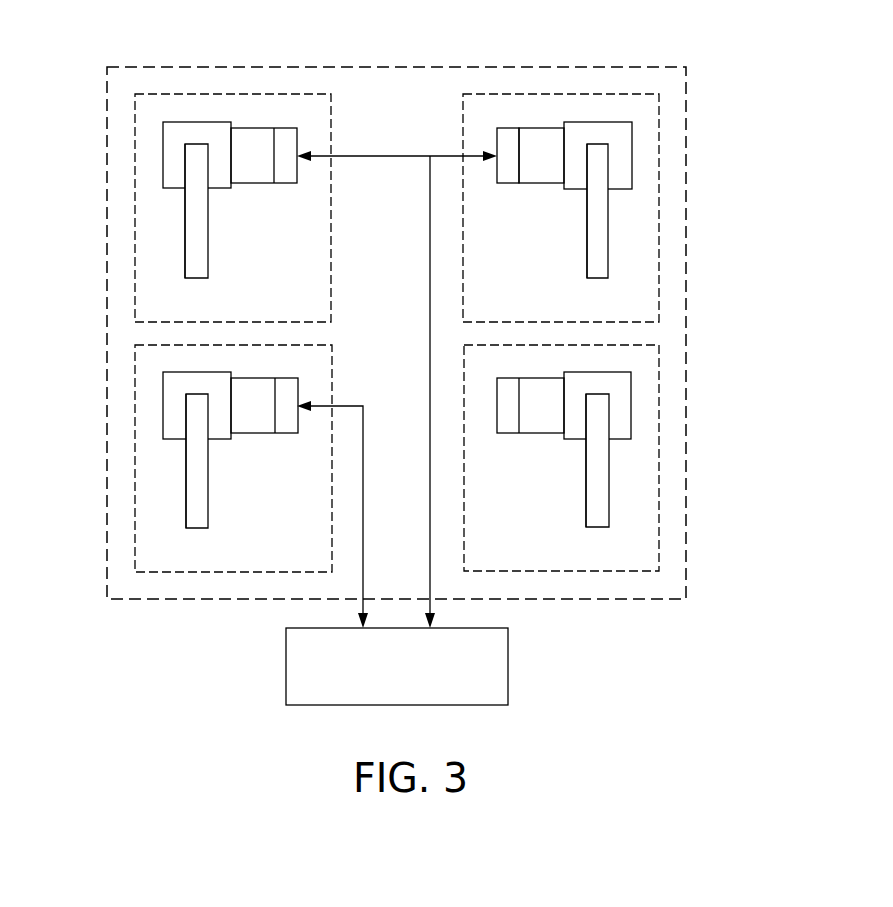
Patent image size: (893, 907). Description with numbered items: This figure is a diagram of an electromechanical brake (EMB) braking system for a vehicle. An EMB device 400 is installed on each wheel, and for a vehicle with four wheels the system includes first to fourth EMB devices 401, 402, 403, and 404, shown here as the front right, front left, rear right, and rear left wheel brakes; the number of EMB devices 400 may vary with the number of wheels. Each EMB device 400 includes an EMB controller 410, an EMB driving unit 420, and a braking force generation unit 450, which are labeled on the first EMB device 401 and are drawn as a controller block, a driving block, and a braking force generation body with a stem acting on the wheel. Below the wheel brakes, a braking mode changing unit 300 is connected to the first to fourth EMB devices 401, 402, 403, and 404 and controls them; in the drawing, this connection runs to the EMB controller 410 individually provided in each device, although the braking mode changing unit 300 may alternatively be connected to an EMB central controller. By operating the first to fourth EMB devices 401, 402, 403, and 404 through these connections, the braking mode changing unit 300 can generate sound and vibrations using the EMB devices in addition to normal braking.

The braking mode changing unit 300 is at (508, 665).
The EMB device 400 is at (686, 139).
The first EMB device 401 is at (610, 168).
The second EMB device 402 is at (135, 205).
The third EMB device 403 is at (659, 457).
The fourth EMB device 404 is at (135, 455).
The EMB controller 410 is at (510, 116).
The EMB driving unit 420 is at (548, 116).
The braking force generation unit 450 is at (612, 110).